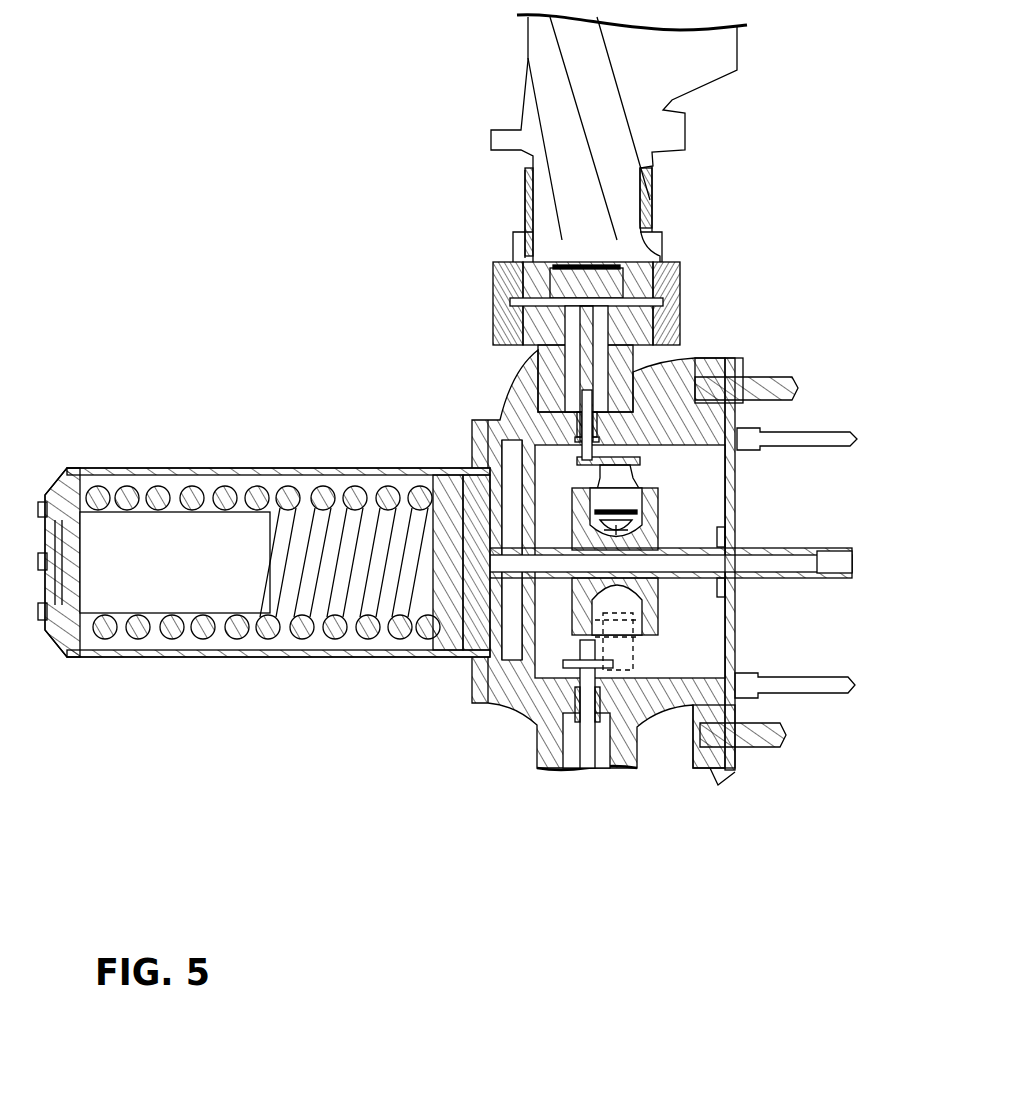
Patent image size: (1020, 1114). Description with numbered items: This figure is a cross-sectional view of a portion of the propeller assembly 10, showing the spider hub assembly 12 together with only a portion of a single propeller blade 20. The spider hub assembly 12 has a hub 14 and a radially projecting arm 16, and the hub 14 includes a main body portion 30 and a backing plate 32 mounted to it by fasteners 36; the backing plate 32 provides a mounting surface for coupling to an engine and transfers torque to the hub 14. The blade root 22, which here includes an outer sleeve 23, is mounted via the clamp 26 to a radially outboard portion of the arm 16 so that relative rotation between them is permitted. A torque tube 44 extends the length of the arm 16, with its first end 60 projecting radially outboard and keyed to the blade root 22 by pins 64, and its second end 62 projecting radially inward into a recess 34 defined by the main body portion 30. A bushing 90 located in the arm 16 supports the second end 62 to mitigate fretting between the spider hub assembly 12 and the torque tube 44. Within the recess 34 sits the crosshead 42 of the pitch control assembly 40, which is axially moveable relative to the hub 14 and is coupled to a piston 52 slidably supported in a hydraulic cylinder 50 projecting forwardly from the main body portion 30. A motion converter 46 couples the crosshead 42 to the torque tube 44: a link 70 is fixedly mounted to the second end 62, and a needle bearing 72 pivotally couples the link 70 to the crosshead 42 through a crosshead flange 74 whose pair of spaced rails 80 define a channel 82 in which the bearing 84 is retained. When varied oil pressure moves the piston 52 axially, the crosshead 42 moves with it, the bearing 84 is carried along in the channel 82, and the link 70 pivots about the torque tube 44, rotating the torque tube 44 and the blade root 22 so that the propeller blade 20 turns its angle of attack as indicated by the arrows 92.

The propeller assembly 10 is at (275, 108).
The spider hub assembly 12 is at (410, 437).
The hub 14 is at (512, 418).
The arm 16 is at (653, 447).
The propeller blade 20 is at (742, 70).
The blade root 22 is at (668, 250).
The outer sleeve 23 is at (668, 268).
The clamp 26 is at (500, 300).
The main body portion 30 is at (588, 342).
The backing plate 32 is at (736, 510).
The recess 34 is at (698, 670).
The fasteners 36 is at (757, 377).
The pitch control assembly 40 is at (653, 650).
The crosshead 42 is at (652, 590).
The torque tube 44 is at (643, 278).
The motion converter 46 is at (650, 452).
The hydraulic cylinder 50 is at (340, 658).
The piston 52 is at (473, 572).
The first end 60 is at (560, 268).
The second end 62 is at (472, 445).
The pins 64 is at (563, 248).
The link 70 is at (495, 418).
The needle bearing 72 is at (650, 497).
The crosshead flange 74 is at (558, 508).
The spaced rails 80 is at (736, 534).
The channel 82 is at (613, 532).
The bearing 84 is at (632, 497).
The bushing 90 is at (555, 412).
The arrows 92 is at (453, 155).